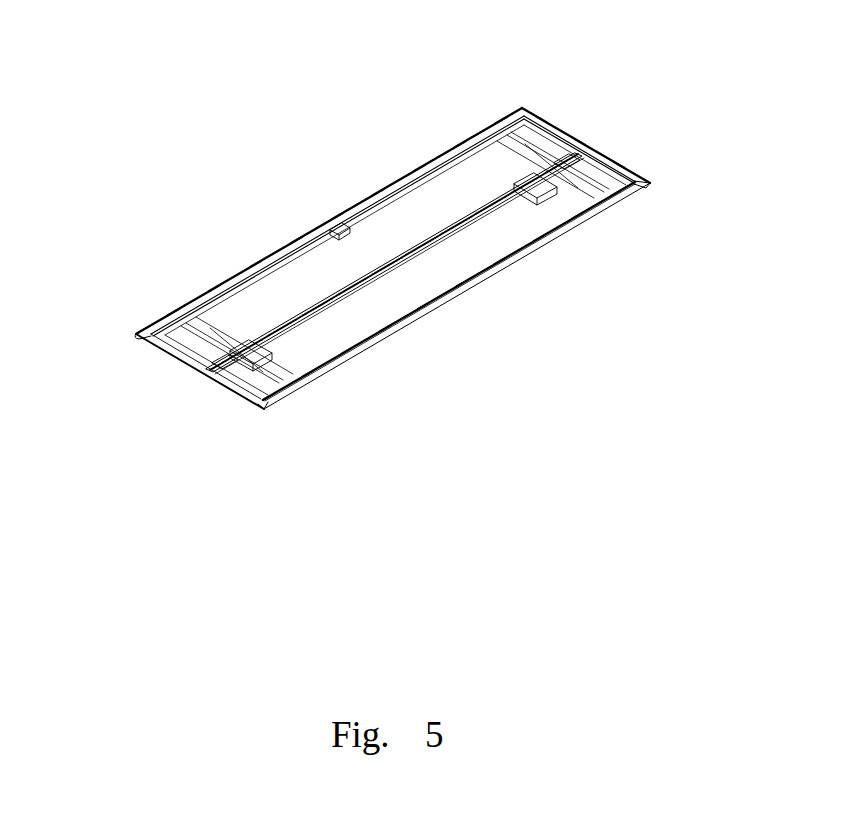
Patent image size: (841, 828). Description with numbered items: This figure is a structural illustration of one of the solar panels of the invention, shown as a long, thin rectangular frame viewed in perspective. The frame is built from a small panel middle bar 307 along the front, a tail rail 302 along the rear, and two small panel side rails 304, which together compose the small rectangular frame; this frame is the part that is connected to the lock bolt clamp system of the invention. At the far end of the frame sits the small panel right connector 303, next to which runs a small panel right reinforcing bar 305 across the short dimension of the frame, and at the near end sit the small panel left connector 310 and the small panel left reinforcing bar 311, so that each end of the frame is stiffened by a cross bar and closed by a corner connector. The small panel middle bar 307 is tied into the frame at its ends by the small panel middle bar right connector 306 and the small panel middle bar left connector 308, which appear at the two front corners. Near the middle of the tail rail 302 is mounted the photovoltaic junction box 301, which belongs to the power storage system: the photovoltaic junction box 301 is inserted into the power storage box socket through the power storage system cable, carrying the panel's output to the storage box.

The photovoltaic junction box 301 is at (342, 230).
The tail rail 302 is at (428, 163).
The small panel right connector 303 is at (524, 113).
The small panel side rail 304 is at (580, 147).
The small panel right reinforcing bar 305 is at (587, 180).
The small panel middle bar right connector 306 is at (650, 187).
The small panel middle bar 307 is at (455, 302).
The small panel middle bar left connector 308 is at (265, 413).
The small panel left connector 310 is at (140, 335).
The small panel left reinforcing bar 311 is at (202, 335).